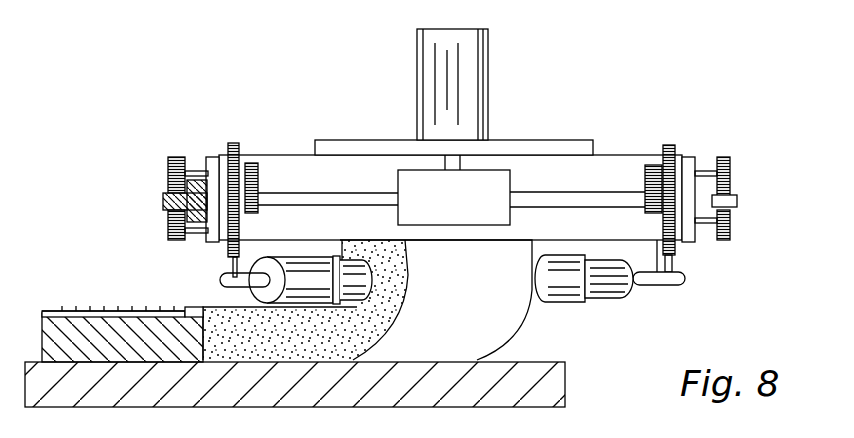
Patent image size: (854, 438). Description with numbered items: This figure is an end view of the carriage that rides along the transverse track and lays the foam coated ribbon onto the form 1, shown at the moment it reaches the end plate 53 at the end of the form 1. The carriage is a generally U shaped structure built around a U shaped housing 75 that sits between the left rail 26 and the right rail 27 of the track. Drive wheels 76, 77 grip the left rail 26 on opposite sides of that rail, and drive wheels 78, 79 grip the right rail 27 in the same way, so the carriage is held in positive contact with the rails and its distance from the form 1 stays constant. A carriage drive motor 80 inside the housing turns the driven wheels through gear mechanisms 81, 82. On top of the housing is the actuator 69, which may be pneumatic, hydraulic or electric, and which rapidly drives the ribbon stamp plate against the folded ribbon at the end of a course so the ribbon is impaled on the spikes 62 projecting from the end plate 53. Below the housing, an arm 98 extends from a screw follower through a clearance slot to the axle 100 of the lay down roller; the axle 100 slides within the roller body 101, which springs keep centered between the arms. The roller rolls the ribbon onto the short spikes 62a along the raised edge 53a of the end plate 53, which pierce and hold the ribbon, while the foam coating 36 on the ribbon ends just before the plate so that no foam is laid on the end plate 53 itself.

The base 1 is at (540, 400).
The foam coating 36 is at (500, 316).
The end plate 53 is at (42, 312).
The spikes 62 is at (50, 310).
The raised edge 53a is at (178, 308).
The short spikes 62a is at (193, 305).
The U shaped housing 75 is at (607, 155).
The actuator 69 is at (488, 33).
The carriage drive motor 80 is at (490, 192).
The gear mechanism 81 is at (258, 180).
The gear mechanism 82 is at (645, 170).
The drive wheel 76 is at (170, 162).
The drive wheel 77 is at (168, 232).
The left rail 26 is at (163, 198).
The drive wheel 78 is at (725, 157).
The drive wheel 79 is at (730, 238).
The right rail 27 is at (737, 200).
The arm 98 is at (670, 263).
The roller body 101 is at (565, 292).
The axle 100 is at (617, 298).